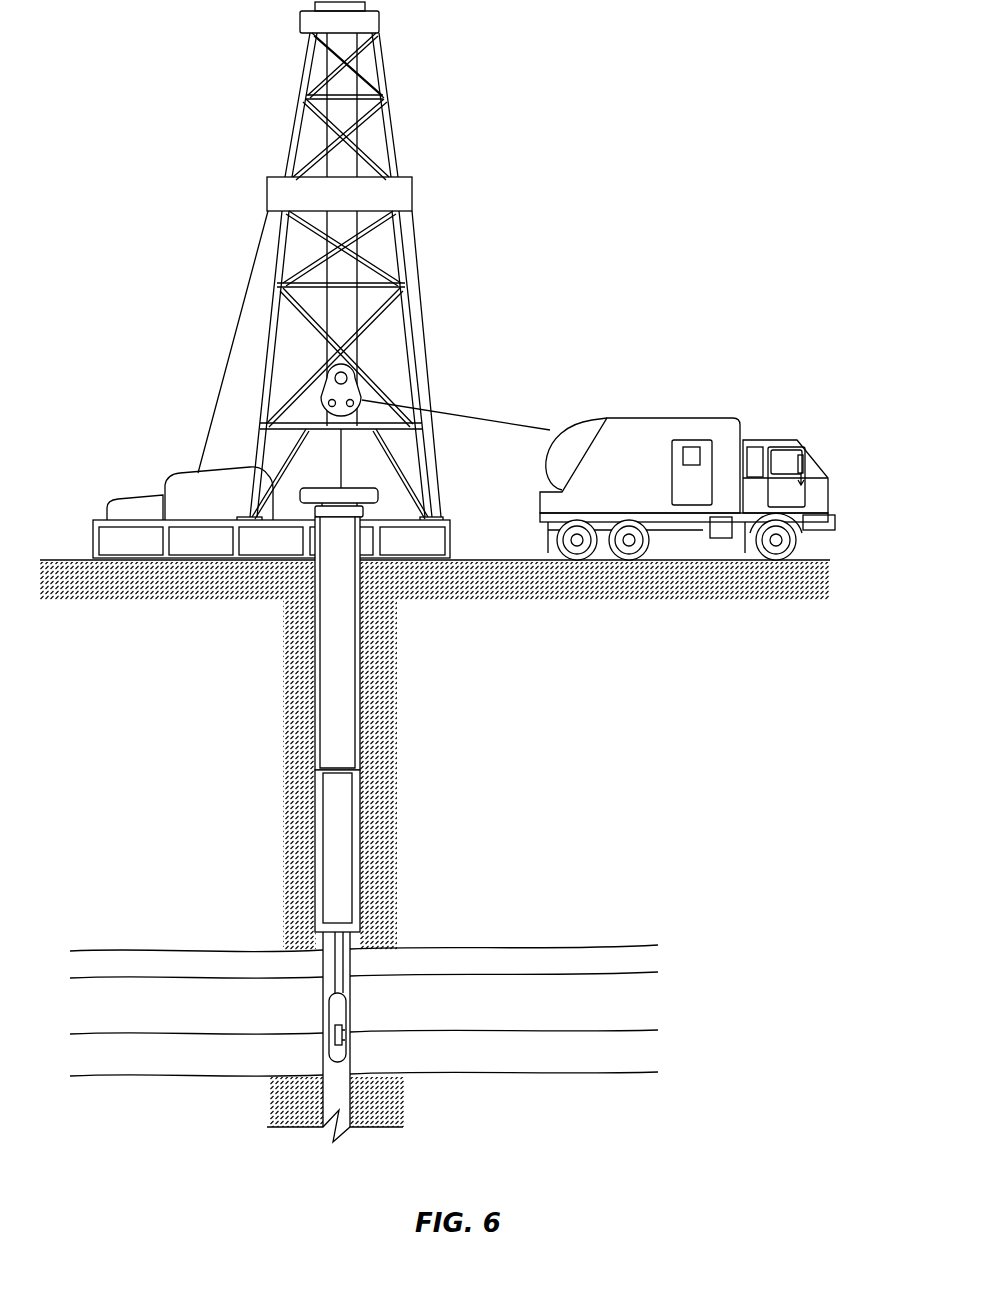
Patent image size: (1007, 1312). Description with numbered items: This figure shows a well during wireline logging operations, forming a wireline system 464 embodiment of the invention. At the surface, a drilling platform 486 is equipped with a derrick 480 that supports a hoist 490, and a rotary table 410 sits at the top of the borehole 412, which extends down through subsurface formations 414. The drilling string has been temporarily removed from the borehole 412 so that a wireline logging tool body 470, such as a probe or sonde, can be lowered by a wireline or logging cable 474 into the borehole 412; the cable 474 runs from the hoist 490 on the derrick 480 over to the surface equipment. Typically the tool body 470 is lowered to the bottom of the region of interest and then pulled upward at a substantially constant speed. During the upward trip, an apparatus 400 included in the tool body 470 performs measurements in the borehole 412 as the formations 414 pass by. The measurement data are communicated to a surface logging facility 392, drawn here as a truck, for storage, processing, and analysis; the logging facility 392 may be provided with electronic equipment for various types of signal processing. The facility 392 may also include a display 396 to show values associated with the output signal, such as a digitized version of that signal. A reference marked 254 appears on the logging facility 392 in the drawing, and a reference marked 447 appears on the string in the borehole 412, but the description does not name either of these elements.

The wireline system 464 is at (566, 130).
The derrick 480 is at (437, 503).
The hoist 490 is at (353, 383).
The wireline or logging cable 474 is at (470, 410).
The rotary table 410 is at (380, 493).
The drilling platform 486 is at (450, 536).
The borehole 412 is at (322, 963).
The drill string 447 is at (333, 983).
The wireline logging tool body 470 is at (347, 1007).
The apparatus 400 is at (345, 1031).
The subsurface formations 414 is at (673, 935).
The surface logging facility 392 is at (645, 418).
The door 254 is at (672, 488).
The display 396 is at (683, 453).